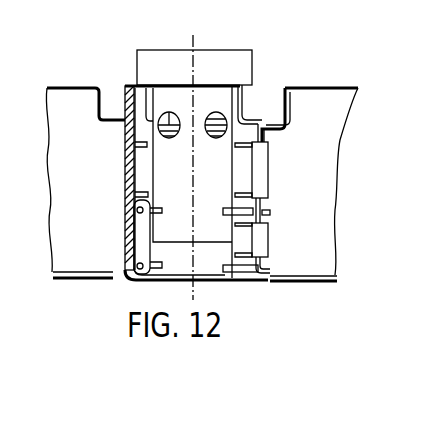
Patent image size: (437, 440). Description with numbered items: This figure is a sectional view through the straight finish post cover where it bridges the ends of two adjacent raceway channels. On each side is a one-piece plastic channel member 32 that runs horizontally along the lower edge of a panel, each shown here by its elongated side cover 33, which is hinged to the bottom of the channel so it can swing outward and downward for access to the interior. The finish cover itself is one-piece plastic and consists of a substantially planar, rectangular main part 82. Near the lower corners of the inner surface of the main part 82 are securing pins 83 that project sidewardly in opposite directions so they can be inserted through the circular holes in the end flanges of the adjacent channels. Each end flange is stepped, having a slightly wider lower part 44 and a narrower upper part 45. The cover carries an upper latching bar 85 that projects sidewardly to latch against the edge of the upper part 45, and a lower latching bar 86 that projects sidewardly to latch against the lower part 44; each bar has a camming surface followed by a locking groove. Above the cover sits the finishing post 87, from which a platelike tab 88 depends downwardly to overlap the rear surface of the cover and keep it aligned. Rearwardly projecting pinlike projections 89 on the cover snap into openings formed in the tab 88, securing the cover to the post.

The channel member 32 is at (58, 104).
The side cover 33 is at (338, 118).
The lower part 44 is at (262, 217).
The upper part 45 is at (267, 135).
The main part 82 is at (180, 265).
The securing pin 83 is at (243, 212).
The upper latching bar 85 is at (258, 173).
The lower latching bar 86 is at (262, 238).
The finishing post 87 is at (243, 68).
The platelike tab 88 is at (202, 100).
The pinlike projection 89 is at (167, 112).